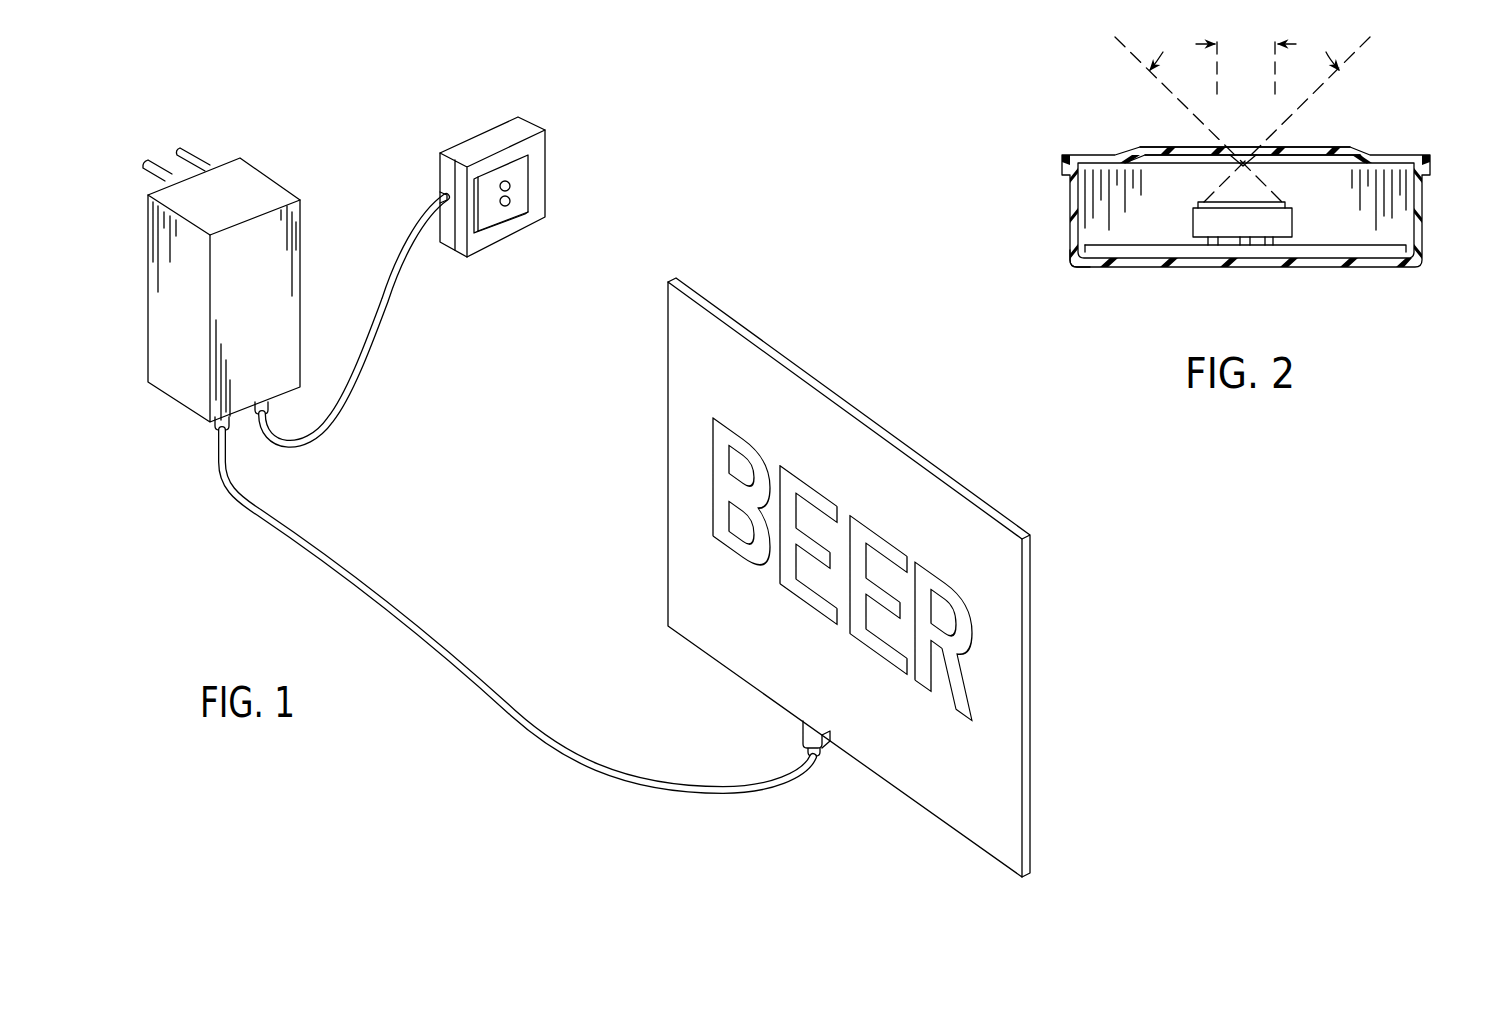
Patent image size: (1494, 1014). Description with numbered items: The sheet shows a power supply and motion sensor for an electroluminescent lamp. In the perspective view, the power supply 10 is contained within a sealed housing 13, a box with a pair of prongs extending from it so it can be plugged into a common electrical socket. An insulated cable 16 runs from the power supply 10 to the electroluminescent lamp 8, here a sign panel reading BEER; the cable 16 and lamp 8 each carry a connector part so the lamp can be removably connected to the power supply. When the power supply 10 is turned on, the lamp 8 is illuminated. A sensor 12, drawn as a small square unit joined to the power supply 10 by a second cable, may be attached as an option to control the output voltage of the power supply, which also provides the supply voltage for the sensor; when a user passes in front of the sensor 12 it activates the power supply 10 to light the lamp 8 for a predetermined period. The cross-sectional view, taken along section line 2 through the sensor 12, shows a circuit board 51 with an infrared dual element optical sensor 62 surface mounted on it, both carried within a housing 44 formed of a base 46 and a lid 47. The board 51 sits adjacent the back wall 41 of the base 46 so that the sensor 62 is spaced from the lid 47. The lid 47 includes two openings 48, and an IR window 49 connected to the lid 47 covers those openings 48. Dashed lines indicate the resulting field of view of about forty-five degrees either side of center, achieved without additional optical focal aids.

In FIG. 1, the power supply 10 is at (236, 141).
In FIG. 1, the sealed housing 13 is at (301, 244).
In FIG. 1, the sensor 12 is at (550, 168).
In FIG. 2, the sensor 12 is at (1425, 228).
In FIG. 1, the section line 2- 2 is at (518, 102).
In FIG. 1, the electroluminescent lamp 8 is at (824, 387).
In FIG. 1, the insulated cable 16 is at (347, 574).
In FIG. 2, the housing 44 is at (1058, 222).
In FIG. 2, the lid 47 is at (1094, 156).
In FIG. 2, the IR window 49 is at (1357, 152).
In FIG. 2, the openings 48 is at (1243, 160).
In FIG. 2, the infrared dual element optical sensor 62 is at (1293, 218).
In FIG. 2, the circuit board 51 is at (1130, 246).
In FIG. 2, the back wall 41 is at (1208, 268).
In FIG. 2, the base 46 is at (1066, 264).